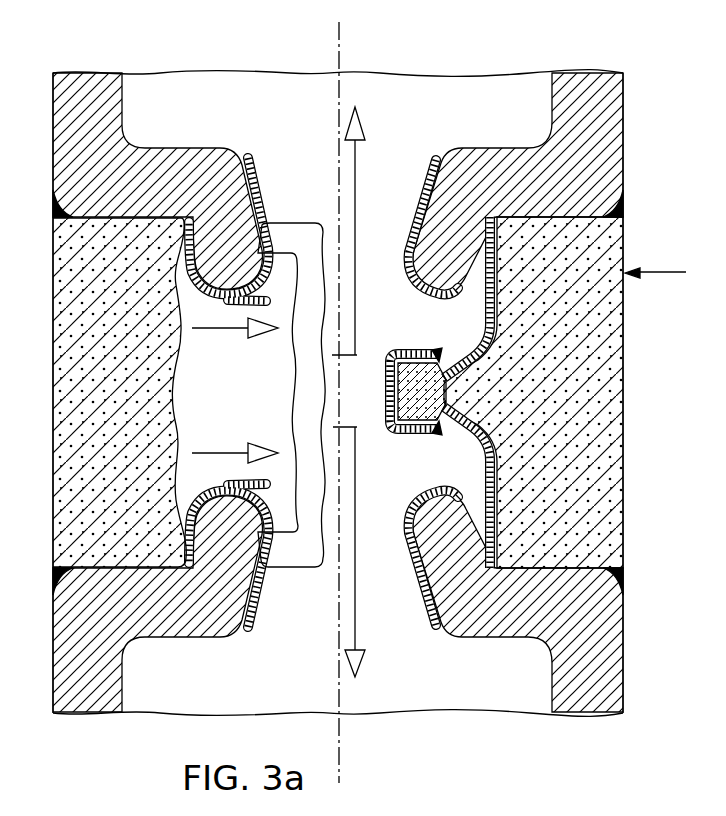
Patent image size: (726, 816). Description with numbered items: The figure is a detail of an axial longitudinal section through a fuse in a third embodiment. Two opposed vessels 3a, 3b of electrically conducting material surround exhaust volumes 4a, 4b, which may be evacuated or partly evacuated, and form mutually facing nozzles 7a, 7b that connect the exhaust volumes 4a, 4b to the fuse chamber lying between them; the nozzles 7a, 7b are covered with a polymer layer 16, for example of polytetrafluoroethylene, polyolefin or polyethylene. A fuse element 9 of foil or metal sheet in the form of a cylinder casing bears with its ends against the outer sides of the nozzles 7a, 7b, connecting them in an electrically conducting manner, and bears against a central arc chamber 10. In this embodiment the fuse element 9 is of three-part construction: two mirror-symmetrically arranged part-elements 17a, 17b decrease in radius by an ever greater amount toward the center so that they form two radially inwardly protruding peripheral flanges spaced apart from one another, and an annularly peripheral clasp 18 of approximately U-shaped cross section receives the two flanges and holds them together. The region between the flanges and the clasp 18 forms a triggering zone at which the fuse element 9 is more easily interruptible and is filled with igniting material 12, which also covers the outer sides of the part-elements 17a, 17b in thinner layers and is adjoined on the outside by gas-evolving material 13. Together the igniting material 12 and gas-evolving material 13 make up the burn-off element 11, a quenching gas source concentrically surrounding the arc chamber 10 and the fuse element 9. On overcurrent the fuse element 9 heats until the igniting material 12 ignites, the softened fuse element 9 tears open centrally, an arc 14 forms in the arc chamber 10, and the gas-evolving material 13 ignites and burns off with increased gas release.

The vessel 3a is at (603, 93).
The vessel 3b is at (608, 670).
The exhaust volume 4a is at (245, 113).
The exhaust volume 4b is at (250, 687).
The nozzle 7a is at (412, 265).
The nozzle 7b is at (412, 507).
The fuse element 9 is at (524, 392).
The arc chamber 10 is at (371, 398).
The burn-off element 11 is at (672, 274).
The igniting material 12 is at (440, 387).
The gas-evolving material 13 is at (600, 343).
The arc 14 is at (305, 383).
The polymer layer 16 is at (420, 277).
The part-element 17a is at (473, 317).
The part-element 17b is at (485, 452).
The clasp 18 is at (395, 352).